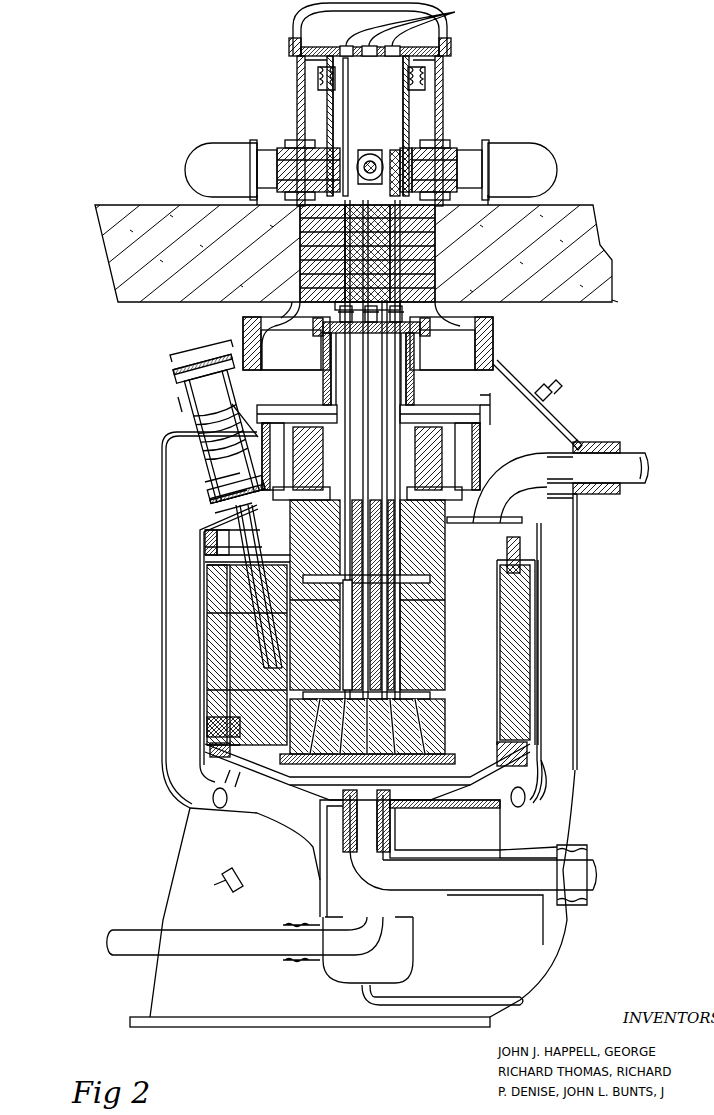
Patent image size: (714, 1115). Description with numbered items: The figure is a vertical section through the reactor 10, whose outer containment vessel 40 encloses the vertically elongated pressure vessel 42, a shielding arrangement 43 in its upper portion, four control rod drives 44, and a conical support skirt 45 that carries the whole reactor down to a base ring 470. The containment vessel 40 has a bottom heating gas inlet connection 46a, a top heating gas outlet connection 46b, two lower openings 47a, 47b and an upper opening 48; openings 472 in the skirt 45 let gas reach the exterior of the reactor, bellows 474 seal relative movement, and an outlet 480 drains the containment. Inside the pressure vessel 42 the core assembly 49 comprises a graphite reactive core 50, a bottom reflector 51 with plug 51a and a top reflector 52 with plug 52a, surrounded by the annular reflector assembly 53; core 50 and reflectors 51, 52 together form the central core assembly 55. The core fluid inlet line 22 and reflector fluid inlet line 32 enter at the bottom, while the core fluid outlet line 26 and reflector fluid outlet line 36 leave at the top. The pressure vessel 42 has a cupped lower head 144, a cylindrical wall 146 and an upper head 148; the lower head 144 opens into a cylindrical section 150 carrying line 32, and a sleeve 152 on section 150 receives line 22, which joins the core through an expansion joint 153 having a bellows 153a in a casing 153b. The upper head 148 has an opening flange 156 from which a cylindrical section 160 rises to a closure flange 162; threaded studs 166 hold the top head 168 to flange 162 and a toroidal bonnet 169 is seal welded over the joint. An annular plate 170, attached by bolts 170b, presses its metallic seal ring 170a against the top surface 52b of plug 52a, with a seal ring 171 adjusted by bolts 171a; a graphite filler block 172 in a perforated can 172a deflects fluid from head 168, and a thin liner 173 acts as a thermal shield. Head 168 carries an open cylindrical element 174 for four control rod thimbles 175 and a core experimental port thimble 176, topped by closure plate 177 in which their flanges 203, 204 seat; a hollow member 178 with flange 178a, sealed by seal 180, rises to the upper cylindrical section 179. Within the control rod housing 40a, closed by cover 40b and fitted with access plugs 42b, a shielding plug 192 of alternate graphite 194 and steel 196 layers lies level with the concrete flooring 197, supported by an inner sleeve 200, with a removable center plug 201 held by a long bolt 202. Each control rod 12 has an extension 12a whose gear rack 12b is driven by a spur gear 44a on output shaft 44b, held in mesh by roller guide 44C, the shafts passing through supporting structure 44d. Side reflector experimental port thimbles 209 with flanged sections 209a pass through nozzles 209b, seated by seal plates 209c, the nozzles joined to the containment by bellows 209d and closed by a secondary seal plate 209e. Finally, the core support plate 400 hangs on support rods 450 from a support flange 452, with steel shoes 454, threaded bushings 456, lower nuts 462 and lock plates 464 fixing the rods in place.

The reactor 10 is at (62, 440).
The control rod 12 is at (303, 218).
The control rod extension 12a is at (330, 108).
The gear rack 12b is at (372, 156).
The core fluid inlet line 22 is at (594, 872).
The core fluid outlet line 26 is at (240, 468).
The reflector fluid inlet line 32 is at (147, 930).
The reflector fluid outlet line 36 is at (637, 452).
The outer containment vessel 40 is at (162, 506).
The control rod housing 40a is at (298, 95).
The cover 40b is at (305, 20).
The pressure vessel 42 is at (200, 623).
The access plugs 42b is at (416, 28).
The shielding arrangement 43 is at (290, 294).
The control rod drive mechanisms 44 is at (190, 150).
The spur gear 44a is at (397, 145).
The output shaft 44b is at (428, 165).
The roller guide 44C is at (353, 183).
The supporting structure 44d is at (290, 150).
The support skirt 45 is at (168, 888).
The bottom heating gas inlet connection 46a is at (225, 878).
The top heating gas outlet connection 46b is at (550, 397).
The lower opening 47a is at (433, 923).
The lower opening 47b is at (498, 857).
The upper opening 48 is at (572, 490).
The core assembly 49 is at (542, 632).
The graphite reactive core 50 is at (444, 612).
The graphite bottom reflector 51 is at (447, 717).
The bottom reflector plug 51a is at (445, 740).
The graphite top reflector 52 is at (445, 541).
The top reflector plug 52a is at (445, 552).
The top surface 52b is at (445, 570).
The graphite annular reflector assembly 53 is at (532, 590).
The central core assembly 55 is at (348, 835).
The cupped lower head 144 is at (268, 800).
The cylindrical vessel wall 146 is at (207, 670).
The upper cupped head 148 is at (205, 545).
The cylindrical section 150 is at (320, 882).
The sleeve 152 is at (433, 853).
The expansion joint 153 is at (343, 822).
The bellows 153a is at (346, 843).
The casing 153b is at (348, 852).
The circular opening flange 156 is at (492, 522).
The cylindrical section 160 is at (527, 443).
The closure flange 162 is at (550, 400).
The threaded studs 166 is at (482, 428).
The top head 168 is at (473, 395).
The toroidal bonnet 169 is at (478, 404).
The annular plate 170 is at (230, 516).
The metallic seal ring 170a is at (240, 527).
The threaded bolts 170b is at (472, 441).
The seal ring 171 is at (322, 470).
The bolts 171a is at (232, 404).
The top cylindrical filler block 172 is at (323, 392).
The metal can 172a is at (282, 465).
The thin metal liner 173 is at (419, 382).
The open cylindrical element 174 is at (323, 357).
The control rod thimbles 175 is at (418, 337).
The core experimental port thimble 176 is at (363, 357).
The flat circular closure plate 177 is at (403, 292).
The hollow cylindrical member 178 is at (505, 203).
The flange 178a is at (323, 308).
The upper cylindrical section 179 is at (410, 155).
The seal 180 is at (323, 326).
The shielding plug 192 is at (303, 233).
The graphite layers 194 is at (300, 242).
The steel layers 196 is at (345, 258).
The concrete flooring 197 is at (615, 298).
The inner sleeve 200 is at (420, 325).
The removable plug 201 is at (245, 203).
The long bolt 202 is at (303, 292).
The thimble flanges 203 is at (432, 267).
The thimble flange 204 is at (433, 285).
The side reflector experimental port thimbles 209 is at (247, 588).
The flanged section 209a is at (232, 527).
The nozzles 209b is at (233, 518).
The seal plate 209c is at (215, 472).
The flexible metallic bellows 209d is at (183, 417).
The inlet pipe end 209e is at (190, 362).
The core support plate 400 is at (522, 753).
The support rods 450 is at (207, 640).
The support flange 452 is at (222, 568).
The steel shoes 454 is at (212, 575).
The bushing 456 is at (210, 551).
The nut 462 is at (218, 758).
The lock plates 464 is at (262, 753).
The base ring 470 is at (150, 1027).
The openings 472 is at (525, 797).
The flexible metallic bellows 474 is at (563, 847).
The outlet 480 is at (510, 996).